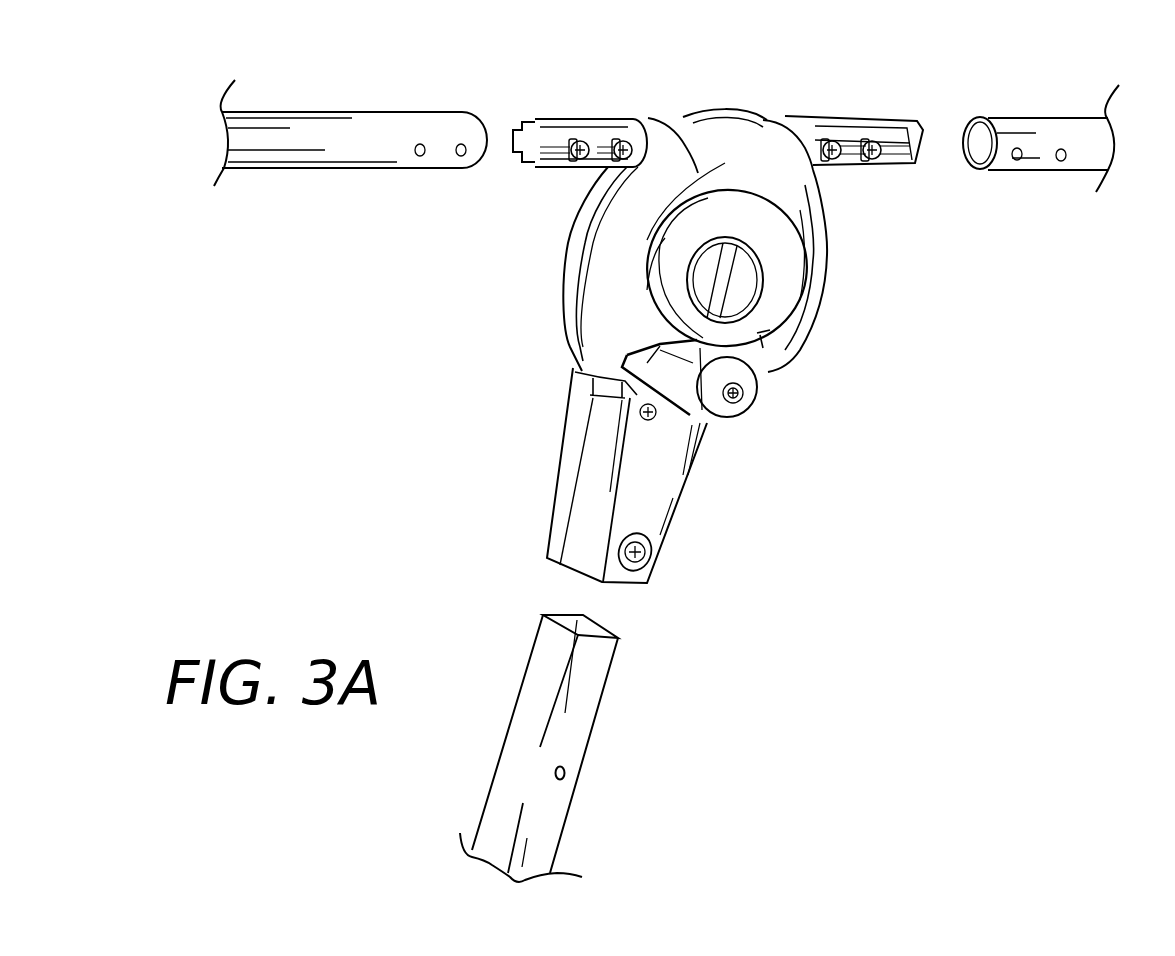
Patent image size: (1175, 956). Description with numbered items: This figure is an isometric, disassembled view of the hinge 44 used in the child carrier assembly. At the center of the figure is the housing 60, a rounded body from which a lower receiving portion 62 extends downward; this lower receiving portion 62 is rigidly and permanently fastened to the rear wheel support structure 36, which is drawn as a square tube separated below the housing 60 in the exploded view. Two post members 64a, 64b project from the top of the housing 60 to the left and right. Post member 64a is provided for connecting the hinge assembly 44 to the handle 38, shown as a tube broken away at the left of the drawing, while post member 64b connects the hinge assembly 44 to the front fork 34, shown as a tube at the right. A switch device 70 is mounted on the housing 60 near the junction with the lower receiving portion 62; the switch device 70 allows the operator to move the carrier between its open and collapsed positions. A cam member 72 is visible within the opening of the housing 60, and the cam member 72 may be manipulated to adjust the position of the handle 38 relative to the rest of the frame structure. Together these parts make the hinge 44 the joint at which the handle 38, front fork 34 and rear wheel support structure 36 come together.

The front fork 34 is at (1073, 130).
The rear wheel support structure 36 is at (550, 830).
The handle 38 is at (376, 128).
The hinge 44 is at (530, 271).
The housing 60 is at (802, 194).
The lower receiving portion 62 is at (667, 492).
The post member 64a is at (557, 130).
The post member 64b is at (890, 130).
The switch device 70 is at (742, 378).
The cam member 72 is at (752, 295).